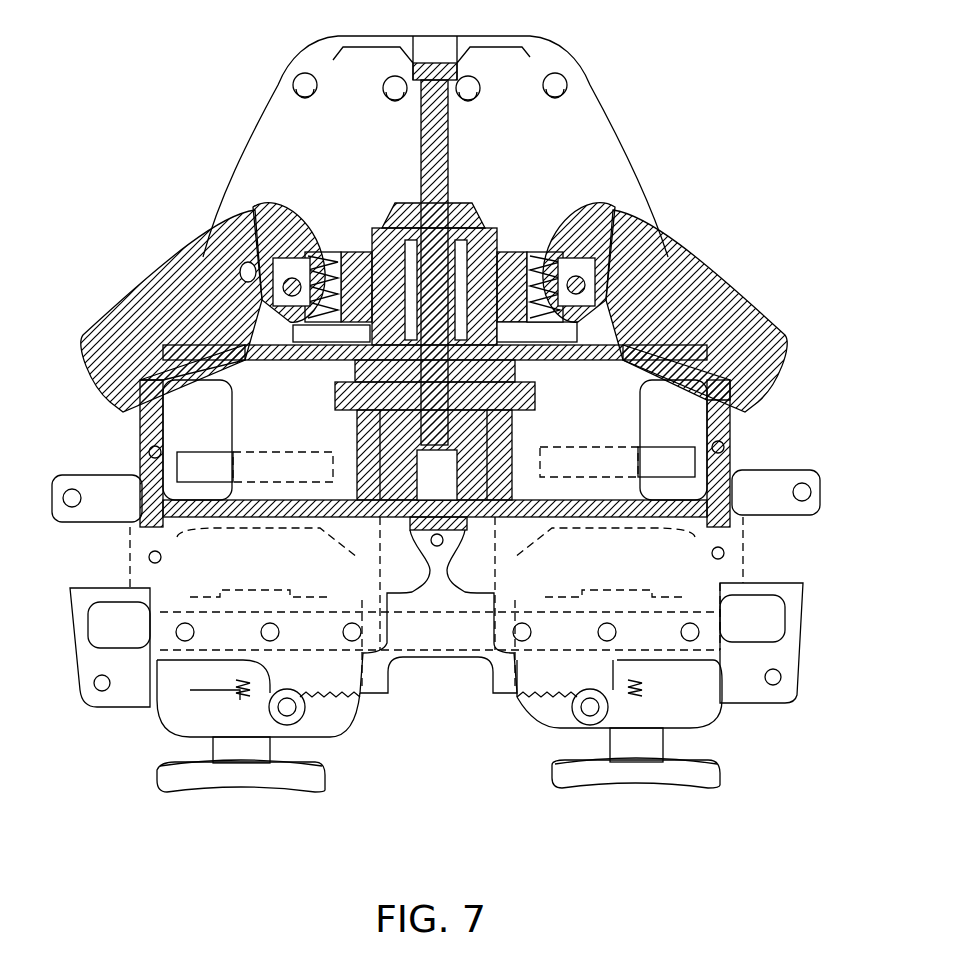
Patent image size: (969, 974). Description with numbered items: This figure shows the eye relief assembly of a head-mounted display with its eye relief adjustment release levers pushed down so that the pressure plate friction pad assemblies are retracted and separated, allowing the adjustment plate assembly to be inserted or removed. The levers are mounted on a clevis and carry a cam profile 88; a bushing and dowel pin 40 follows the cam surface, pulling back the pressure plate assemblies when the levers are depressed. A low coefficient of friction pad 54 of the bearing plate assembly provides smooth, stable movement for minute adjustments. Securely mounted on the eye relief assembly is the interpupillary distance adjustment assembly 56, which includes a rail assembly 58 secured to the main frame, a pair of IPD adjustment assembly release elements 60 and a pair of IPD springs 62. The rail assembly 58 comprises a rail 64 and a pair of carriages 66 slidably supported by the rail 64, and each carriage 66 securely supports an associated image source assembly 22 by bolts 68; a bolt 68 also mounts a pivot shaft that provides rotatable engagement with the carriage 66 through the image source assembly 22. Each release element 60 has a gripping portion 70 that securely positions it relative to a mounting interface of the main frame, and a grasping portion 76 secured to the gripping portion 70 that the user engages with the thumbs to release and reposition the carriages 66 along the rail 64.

The image source assembly 22 is at (707, 723).
The bushing and dowel pin 40 is at (620, 262).
The low coefficient of friction pad 54 is at (452, 205).
The interpupillary adjustment assembly 56 is at (137, 762).
The rail assembly 58 is at (422, 645).
The IPD adjustment assembly release element 60 is at (682, 787).
The IPD spring 62 is at (263, 700).
The rail 64 is at (458, 650).
The carriage 66 is at (700, 717).
The bolt 68 is at (583, 717).
The IPD adjustment assembly gripping portion 70 is at (543, 713).
The grasping portion 76 is at (590, 778).
The cam profile 88 is at (605, 215).